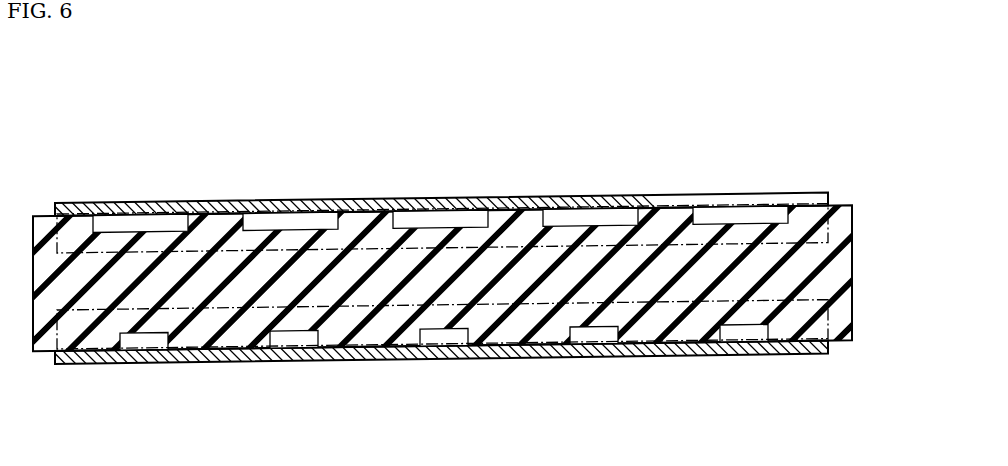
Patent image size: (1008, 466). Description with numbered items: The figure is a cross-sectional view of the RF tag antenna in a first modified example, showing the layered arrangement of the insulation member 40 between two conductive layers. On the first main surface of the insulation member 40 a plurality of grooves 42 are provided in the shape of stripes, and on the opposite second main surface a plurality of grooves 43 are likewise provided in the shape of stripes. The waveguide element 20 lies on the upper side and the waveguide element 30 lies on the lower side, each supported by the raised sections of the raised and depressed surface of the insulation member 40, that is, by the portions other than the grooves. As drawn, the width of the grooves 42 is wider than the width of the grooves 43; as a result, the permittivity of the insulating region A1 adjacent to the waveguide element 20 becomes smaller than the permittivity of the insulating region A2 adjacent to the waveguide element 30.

The waveguide element 20 is at (828, 198).
The waveguide element 30 is at (830, 347).
The insulation member 40 is at (840, 272).
The grooves 42 is at (138, 224).
The grooves 43 is at (143, 342).
The insulating region A1 is at (832, 228).
The insulating region A2 is at (832, 323).